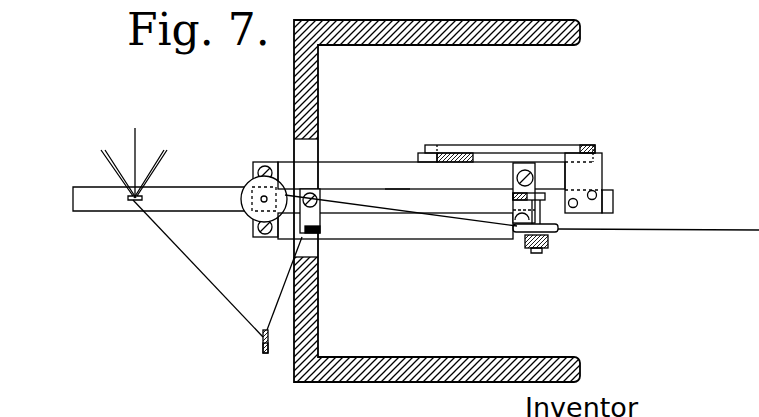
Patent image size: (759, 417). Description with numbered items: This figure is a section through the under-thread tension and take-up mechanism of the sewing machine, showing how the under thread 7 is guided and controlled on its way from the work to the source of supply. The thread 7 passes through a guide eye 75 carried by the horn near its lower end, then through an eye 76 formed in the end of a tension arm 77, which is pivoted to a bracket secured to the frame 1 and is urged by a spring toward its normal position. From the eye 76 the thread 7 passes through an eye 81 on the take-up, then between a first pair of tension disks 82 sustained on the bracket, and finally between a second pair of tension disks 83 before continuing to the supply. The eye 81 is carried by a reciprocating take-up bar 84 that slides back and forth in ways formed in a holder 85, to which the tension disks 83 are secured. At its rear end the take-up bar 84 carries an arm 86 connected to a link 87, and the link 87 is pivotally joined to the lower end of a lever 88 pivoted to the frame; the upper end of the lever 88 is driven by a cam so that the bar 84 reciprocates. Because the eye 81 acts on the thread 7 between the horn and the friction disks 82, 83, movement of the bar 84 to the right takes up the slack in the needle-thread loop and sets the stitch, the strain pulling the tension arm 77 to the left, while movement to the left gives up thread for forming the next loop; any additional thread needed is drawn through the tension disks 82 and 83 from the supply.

The frame 1 is at (333, 382).
The under thread 7 is at (482, 223).
The guide eye 75 is at (128, 207).
The eye 76 is at (263, 340).
The tension arm 77 is at (265, 353).
The eye 81 is at (318, 233).
The tension disks 82 is at (247, 220).
The tension disks 83 is at (553, 233).
The take-up bar 84 is at (396, 186).
The holder 85 is at (372, 172).
The arm 86 is at (598, 170).
The link 87 is at (505, 147).
The lever 88 is at (450, 153).